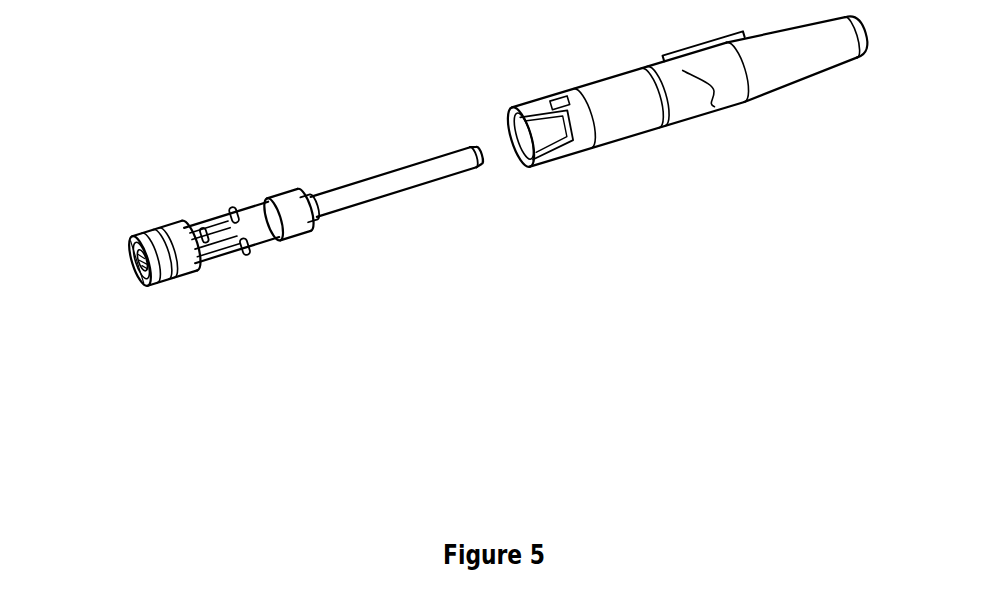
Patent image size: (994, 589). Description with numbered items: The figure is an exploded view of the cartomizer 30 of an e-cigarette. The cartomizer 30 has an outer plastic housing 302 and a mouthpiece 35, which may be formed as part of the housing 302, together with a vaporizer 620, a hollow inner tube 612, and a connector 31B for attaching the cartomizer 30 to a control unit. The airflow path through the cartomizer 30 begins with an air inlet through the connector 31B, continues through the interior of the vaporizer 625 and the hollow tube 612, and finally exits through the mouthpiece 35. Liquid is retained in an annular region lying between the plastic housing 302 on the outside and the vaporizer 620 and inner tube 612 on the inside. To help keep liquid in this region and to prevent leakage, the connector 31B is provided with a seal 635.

The cartomizer 30 is at (490, 218).
The plastic housing 302 is at (603, 153).
The mouthpiece 35 is at (862, 62).
The hollow inner tube 612 is at (442, 187).
The vaporizer 620 is at (203, 212).
The vaporizer 625 is at (209, 245).
The seal 635 is at (148, 287).
The connector 31B is at (135, 275).